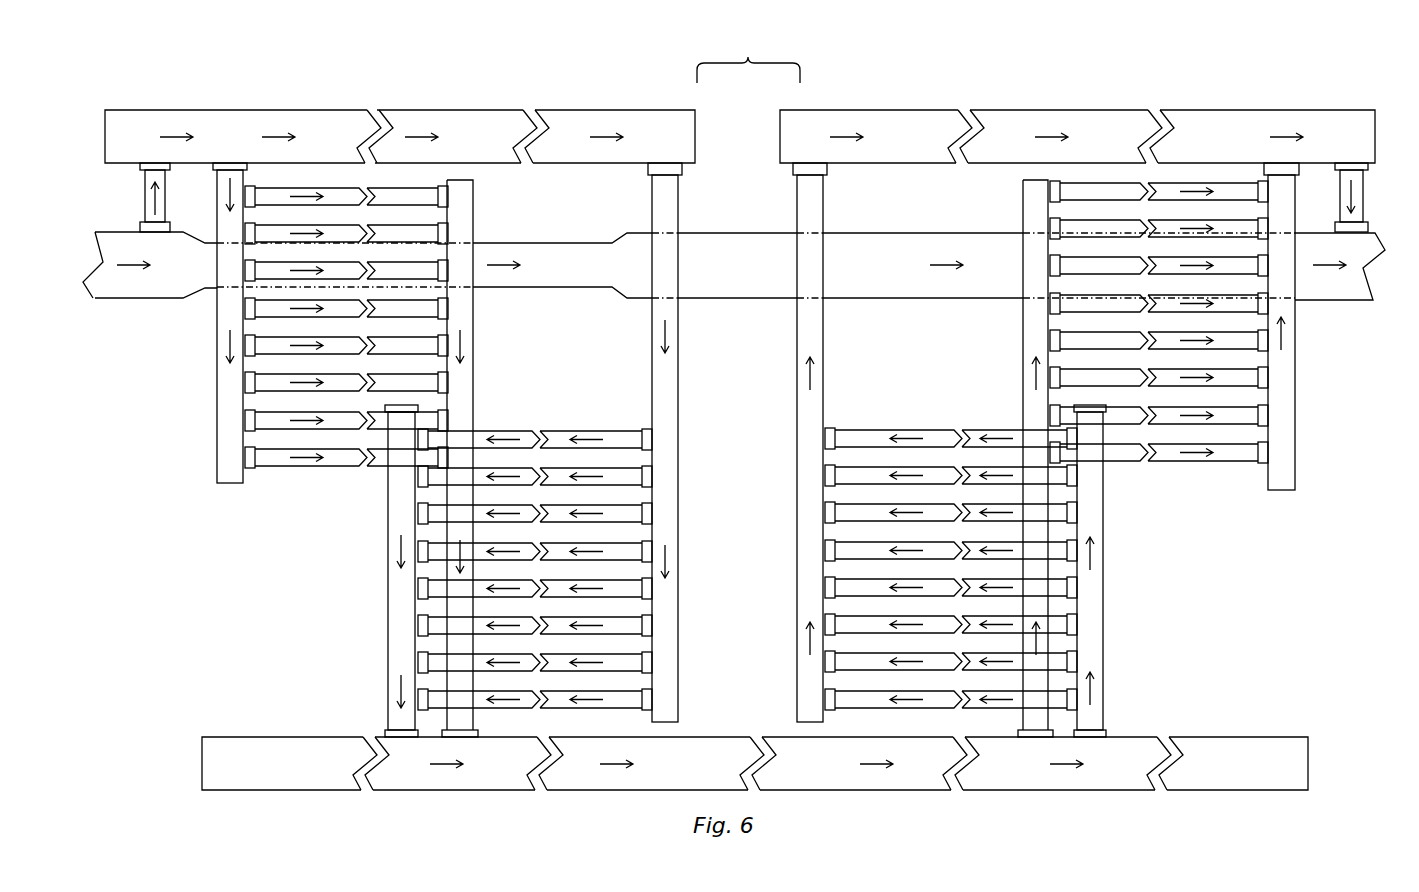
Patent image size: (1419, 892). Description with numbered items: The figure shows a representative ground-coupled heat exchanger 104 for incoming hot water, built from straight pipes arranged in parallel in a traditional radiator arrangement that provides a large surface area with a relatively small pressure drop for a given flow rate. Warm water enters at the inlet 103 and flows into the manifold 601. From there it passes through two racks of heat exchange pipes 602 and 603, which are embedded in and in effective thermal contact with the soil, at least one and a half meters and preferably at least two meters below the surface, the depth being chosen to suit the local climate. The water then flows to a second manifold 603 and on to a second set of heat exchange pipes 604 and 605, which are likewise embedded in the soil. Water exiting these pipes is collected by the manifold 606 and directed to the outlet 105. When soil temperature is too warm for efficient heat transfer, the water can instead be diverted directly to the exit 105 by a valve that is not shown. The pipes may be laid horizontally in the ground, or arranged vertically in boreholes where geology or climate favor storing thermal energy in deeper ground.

The water inlet 103 is at (123, 300).
The ground-coupled heat exchanger 104 is at (748, 58).
The exit 105 is at (1353, 303).
The manifold 601 is at (497, 165).
The rack of heat exchange pipes 602 is at (322, 477).
The rack of heat exchange pipes / second manifold 603 is at (520, 422).
The heat exchange pipes 604 is at (945, 422).
The heat exchange pipes 605 is at (1200, 478).
The manifold 606 is at (893, 168).